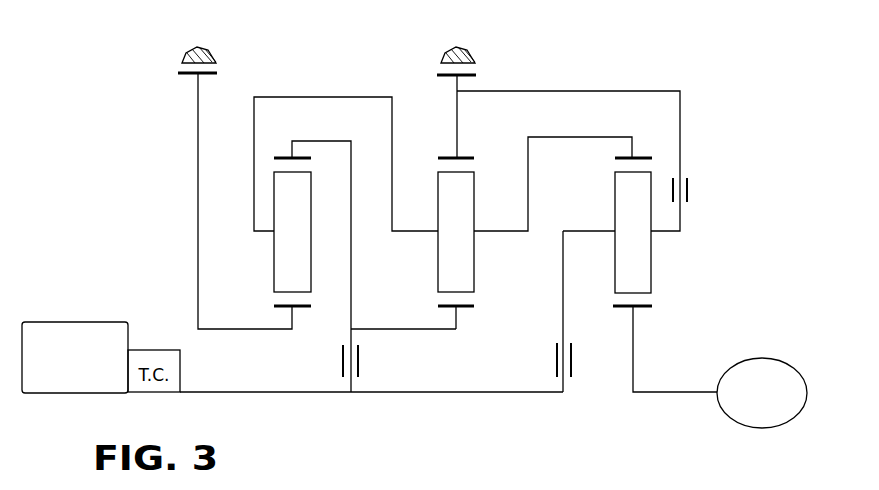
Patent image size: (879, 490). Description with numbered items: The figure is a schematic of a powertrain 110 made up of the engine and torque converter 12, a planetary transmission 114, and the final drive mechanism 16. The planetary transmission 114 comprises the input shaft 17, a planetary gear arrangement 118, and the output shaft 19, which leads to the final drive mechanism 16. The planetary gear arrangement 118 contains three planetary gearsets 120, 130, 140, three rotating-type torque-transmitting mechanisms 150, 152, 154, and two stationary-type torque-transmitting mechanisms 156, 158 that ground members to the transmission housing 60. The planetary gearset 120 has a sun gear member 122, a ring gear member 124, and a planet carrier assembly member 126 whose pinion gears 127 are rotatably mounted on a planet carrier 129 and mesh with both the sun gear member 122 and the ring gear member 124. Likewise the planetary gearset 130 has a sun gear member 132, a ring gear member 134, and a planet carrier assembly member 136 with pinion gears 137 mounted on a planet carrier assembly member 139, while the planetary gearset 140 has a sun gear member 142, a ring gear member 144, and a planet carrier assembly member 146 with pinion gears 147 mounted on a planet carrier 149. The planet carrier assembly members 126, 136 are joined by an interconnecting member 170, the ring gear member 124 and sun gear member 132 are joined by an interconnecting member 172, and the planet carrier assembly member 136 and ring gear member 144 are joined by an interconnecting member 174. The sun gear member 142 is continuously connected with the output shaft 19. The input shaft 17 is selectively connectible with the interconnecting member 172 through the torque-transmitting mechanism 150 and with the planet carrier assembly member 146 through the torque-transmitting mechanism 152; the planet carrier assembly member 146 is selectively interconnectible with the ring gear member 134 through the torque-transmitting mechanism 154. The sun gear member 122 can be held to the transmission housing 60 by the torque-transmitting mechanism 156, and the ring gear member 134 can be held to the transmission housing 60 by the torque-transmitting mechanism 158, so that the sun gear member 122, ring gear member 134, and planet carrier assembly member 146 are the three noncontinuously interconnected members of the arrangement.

The engine and torque converter 12 is at (78, 320).
The final drive mechanism 16 is at (790, 358).
The input shaft 17 is at (197, 395).
The output shaft 19 is at (697, 393).
The transmission housing 60 is at (211, 55).
The powertrain 110 is at (150, 178).
The planetary transmission 114 is at (527, 50).
The planetary gear arrangement 118 is at (392, 362).
The planetary gearset 120 is at (266, 298).
The sun gear member 122 is at (303, 309).
The ring gear member 124 is at (283, 157).
The planet carrier assembly member 126 is at (273, 173).
The pinion gears 127 is at (282, 205).
The planet carrier 129 is at (264, 232).
The planetary gearset 130 is at (461, 326).
The sun gear member 132 is at (465, 308).
The ring gear member 134 is at (445, 157).
The planet carrier assembly member 136 is at (437, 172).
The pinion gears 137 is at (470, 192).
The planet carrier assembly member 139 is at (411, 230).
The planetary gearset 140 is at (612, 298).
The sun gear member 142 is at (643, 308).
The ring gear member 144 is at (645, 157).
The planet carrier assembly member 146 is at (613, 172).
The pinion gears 147 is at (620, 198).
The planet carrier 149 is at (665, 233).
The torque-transmitting mechanism 150 is at (362, 360).
The torque-transmitting mechanism 152 is at (555, 365).
The torque-transmitting mechanism 154 is at (690, 190).
The torque-transmitting mechanism 156 is at (178, 75).
The torque-transmitting mechanism 158 is at (437, 76).
The interconnecting member 170 is at (328, 97).
The interconnecting member 172 is at (402, 330).
The interconnecting member 174 is at (553, 137).